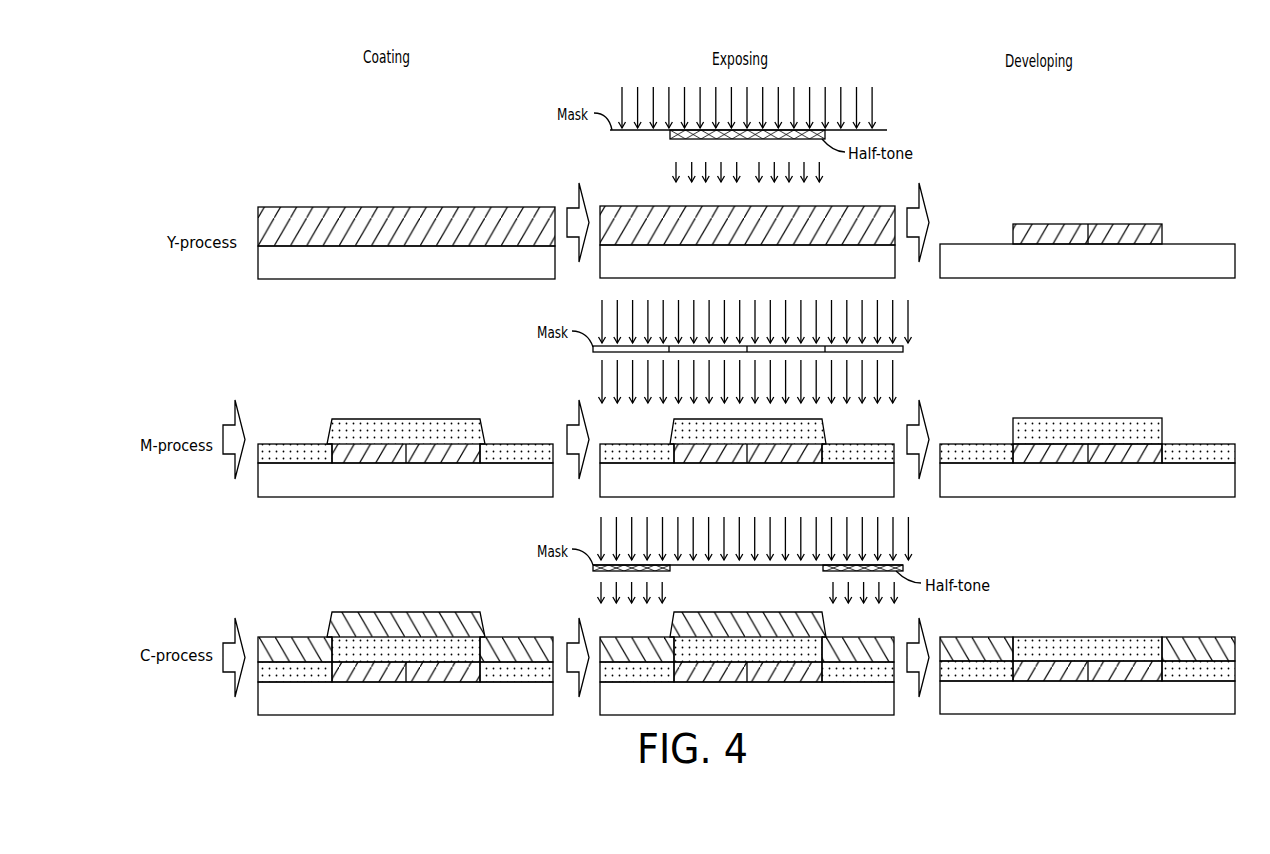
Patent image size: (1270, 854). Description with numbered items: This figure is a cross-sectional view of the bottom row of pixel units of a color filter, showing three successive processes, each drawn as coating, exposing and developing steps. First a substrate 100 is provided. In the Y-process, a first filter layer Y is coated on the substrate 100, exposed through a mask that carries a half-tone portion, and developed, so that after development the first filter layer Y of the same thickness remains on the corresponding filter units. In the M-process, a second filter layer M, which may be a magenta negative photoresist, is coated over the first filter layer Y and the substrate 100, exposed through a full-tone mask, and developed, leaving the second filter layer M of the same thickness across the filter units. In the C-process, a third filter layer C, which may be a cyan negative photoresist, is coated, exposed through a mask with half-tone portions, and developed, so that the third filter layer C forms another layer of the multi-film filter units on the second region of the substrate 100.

The substrate 100 is at (288, 265).
The first filter layer Y is at (419, 225).
The second filter layer M is at (407, 428).
The third filter layer C is at (404, 623).